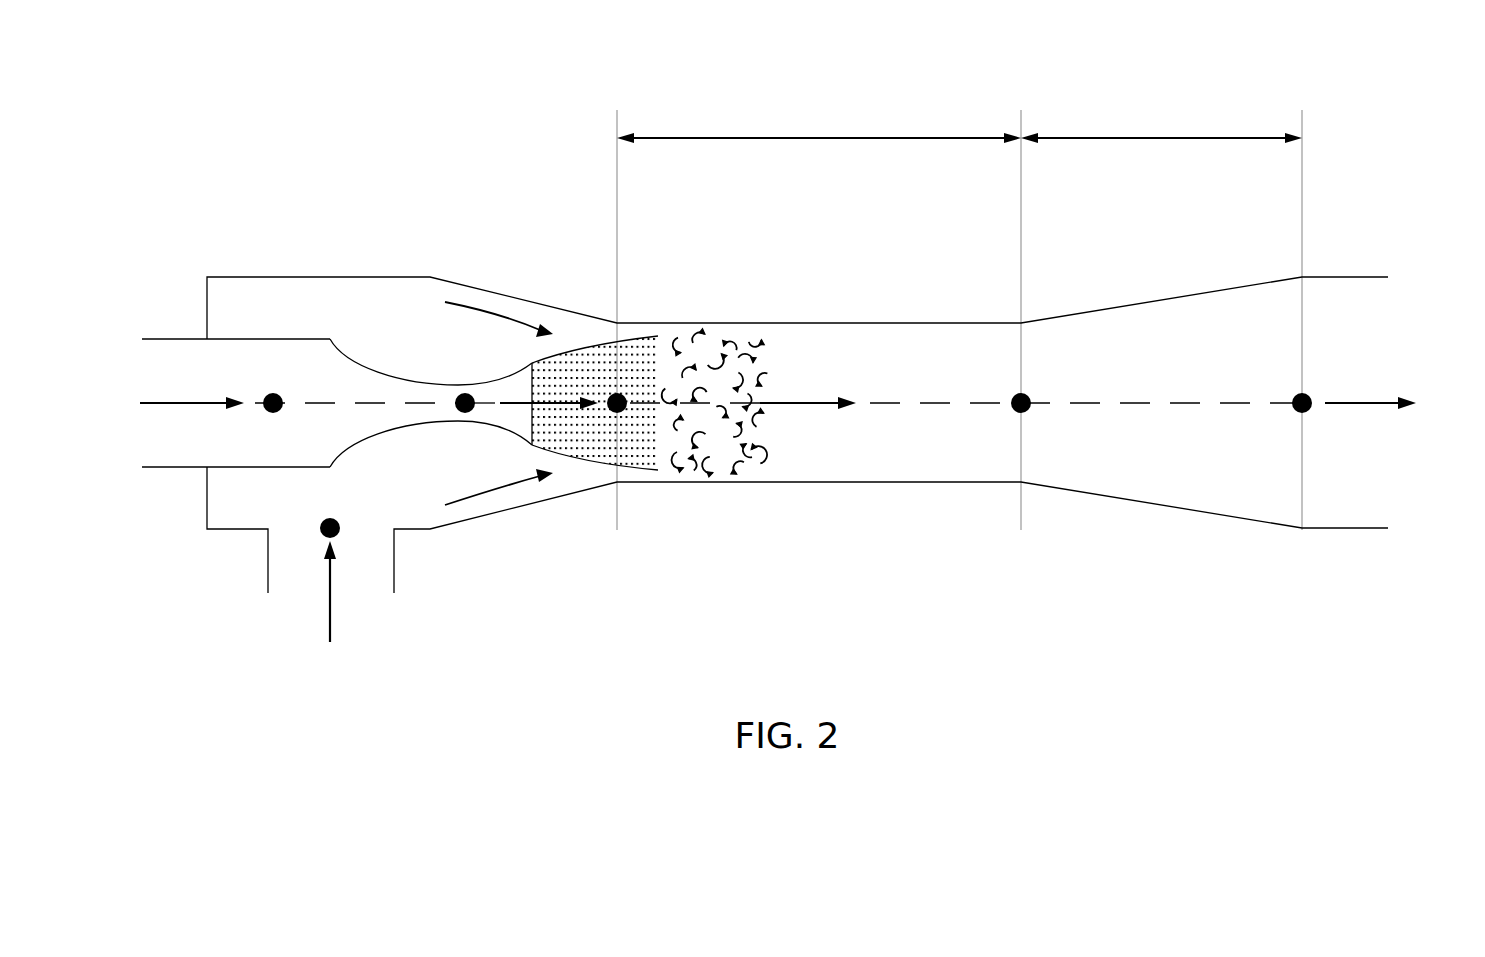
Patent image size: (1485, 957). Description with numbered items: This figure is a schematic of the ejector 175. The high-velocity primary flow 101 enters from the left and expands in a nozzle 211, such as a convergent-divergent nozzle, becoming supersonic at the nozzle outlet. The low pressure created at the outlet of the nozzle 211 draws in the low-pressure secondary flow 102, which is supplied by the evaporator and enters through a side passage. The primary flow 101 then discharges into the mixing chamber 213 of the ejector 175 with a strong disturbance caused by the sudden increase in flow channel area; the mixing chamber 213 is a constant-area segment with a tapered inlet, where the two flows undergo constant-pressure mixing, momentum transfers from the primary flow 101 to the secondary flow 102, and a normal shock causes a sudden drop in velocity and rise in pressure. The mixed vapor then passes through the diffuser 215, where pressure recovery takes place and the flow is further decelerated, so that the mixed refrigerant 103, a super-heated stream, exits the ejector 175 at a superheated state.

The ejector 175 is at (372, 130).
The primary flow 101 is at (168, 402).
The secondary flow 102 is at (333, 598).
The mixed refrigerant 103 is at (1399, 402).
The nozzle 211 is at (443, 460).
The mixing chamber 213 is at (815, 135).
The diffuser 215 is at (1170, 135).